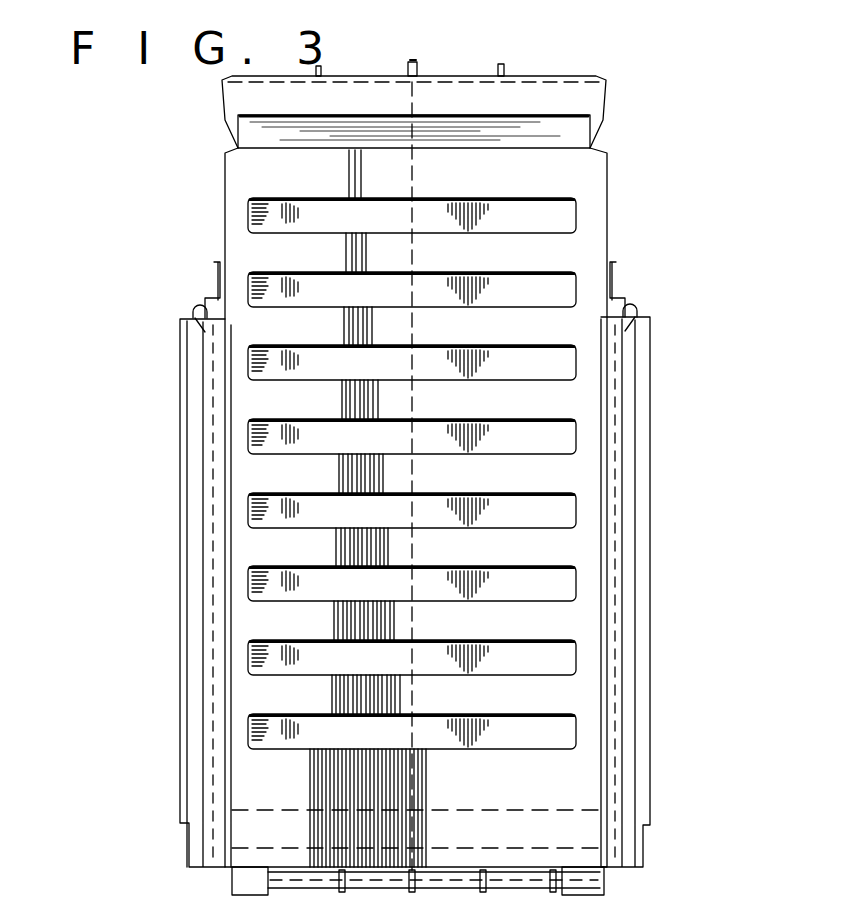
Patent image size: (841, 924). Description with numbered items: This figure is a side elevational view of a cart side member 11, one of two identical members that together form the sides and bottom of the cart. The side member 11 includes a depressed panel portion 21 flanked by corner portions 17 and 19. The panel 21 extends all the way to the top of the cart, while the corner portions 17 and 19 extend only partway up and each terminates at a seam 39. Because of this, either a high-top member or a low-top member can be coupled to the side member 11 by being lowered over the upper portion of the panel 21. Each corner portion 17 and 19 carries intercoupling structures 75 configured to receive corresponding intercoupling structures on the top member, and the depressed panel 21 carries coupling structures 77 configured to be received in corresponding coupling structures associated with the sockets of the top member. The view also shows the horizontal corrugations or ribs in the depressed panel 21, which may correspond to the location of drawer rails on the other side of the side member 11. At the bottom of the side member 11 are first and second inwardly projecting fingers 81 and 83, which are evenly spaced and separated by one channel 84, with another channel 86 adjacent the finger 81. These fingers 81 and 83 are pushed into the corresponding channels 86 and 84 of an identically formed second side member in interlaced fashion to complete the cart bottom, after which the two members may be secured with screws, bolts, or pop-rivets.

The side member 11 is at (658, 621).
The corner portion 17 is at (198, 689).
The corner portion 19 is at (640, 722).
The depressed panel portion 21 is at (560, 547).
The seam 39 is at (192, 309).
The intercoupling structures 75 is at (197, 300).
The coupling structures 77 is at (500, 64).
The first inwardly projecting finger 81 is at (358, 888).
The second inwardly projecting finger 83 is at (548, 888).
The channel 84 is at (470, 888).
The channel 86 is at (300, 888).